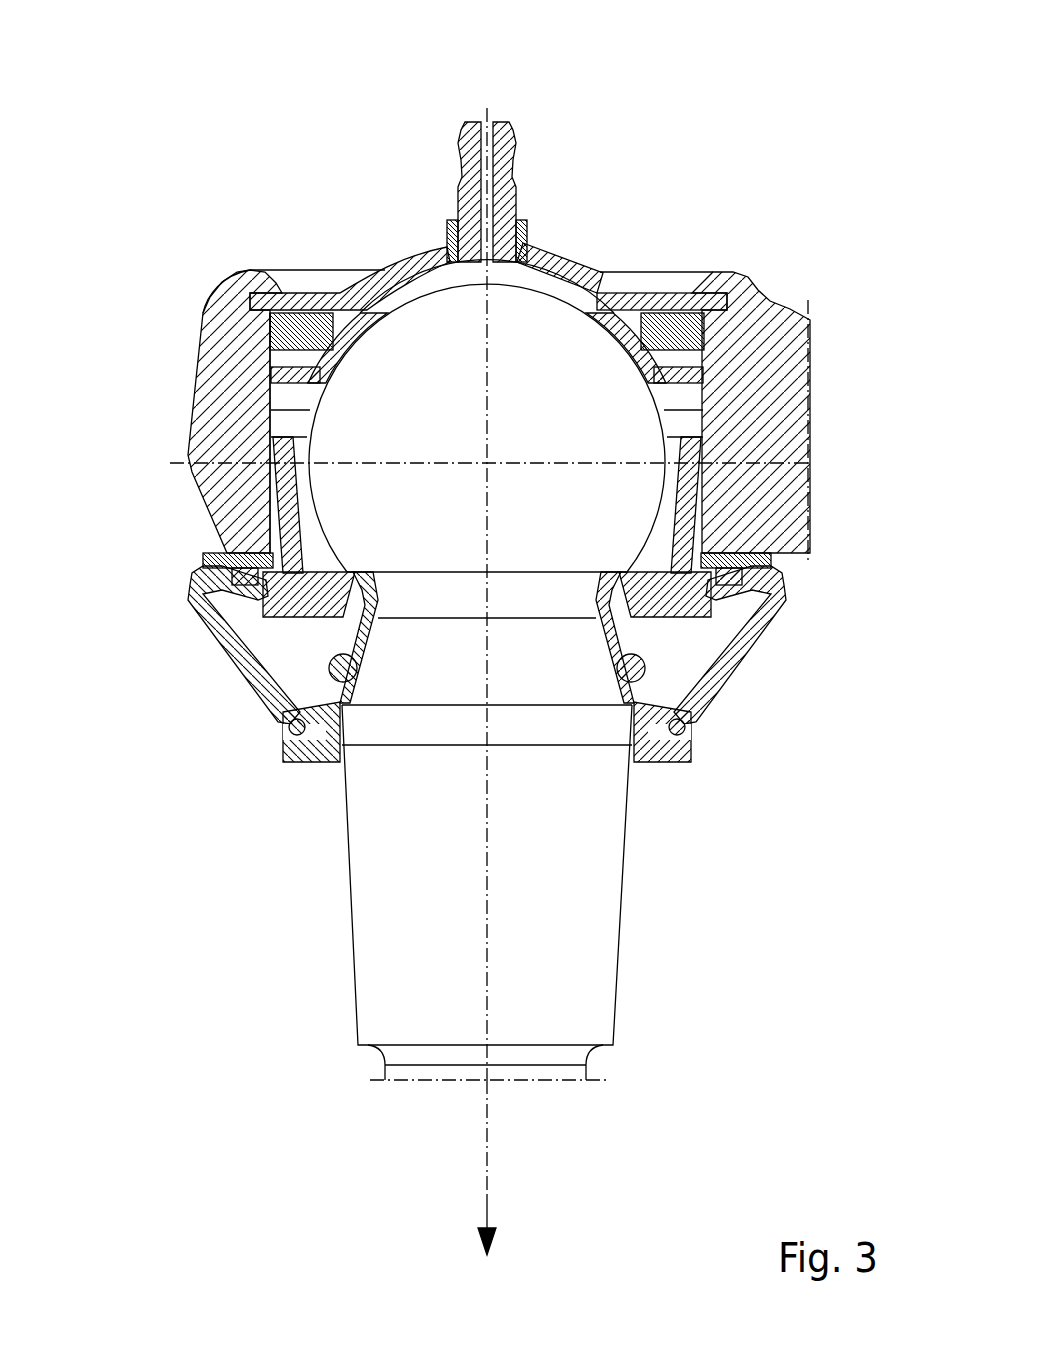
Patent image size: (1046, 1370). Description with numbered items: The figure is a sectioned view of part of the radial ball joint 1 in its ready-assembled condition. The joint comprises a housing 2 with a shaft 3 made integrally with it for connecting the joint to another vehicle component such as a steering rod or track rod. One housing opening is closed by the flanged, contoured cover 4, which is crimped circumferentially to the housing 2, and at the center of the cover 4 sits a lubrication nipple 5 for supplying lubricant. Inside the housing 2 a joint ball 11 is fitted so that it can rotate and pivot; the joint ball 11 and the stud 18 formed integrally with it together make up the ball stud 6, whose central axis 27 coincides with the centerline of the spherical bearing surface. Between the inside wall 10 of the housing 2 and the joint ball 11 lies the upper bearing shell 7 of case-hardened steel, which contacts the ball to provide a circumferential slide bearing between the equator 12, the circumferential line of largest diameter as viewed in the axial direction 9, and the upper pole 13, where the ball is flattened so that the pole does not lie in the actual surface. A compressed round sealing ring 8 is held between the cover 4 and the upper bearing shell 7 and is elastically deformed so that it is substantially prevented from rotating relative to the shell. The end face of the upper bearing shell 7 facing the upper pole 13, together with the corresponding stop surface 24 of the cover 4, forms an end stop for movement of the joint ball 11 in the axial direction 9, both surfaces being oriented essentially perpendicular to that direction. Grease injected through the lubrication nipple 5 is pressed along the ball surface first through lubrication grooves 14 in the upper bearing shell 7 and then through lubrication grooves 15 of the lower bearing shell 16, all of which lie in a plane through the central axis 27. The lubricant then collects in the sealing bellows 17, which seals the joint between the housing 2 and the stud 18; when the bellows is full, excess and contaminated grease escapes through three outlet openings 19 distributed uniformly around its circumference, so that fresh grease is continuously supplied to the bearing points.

The radial ball joint 1 is at (680, 226).
The housing 2 is at (180, 427).
The shaft 3 is at (793, 404).
The cover 4 is at (553, 265).
The lubrication nipple 5 is at (516, 128).
The ball stud 6 is at (320, 941).
The upper bearing shell 7 is at (330, 335).
The round sealing ring 8 is at (757, 290).
The axial direction 9 is at (487, 1217).
The inside wall 10 is at (265, 410).
The joint ball 11 is at (372, 512).
The equator 12 is at (345, 468).
The upper pole 13 is at (448, 300).
The lubrication grooves 14 is at (628, 378).
The lubrication grooves 15 is at (645, 525).
The lower bearing shell 16 is at (660, 506).
The sealing bellows 17 is at (727, 650).
The stud 18 is at (370, 848).
The outlet openings 19 is at (258, 724).
The stop surface 24 is at (257, 322).
The central axis 27 is at (487, 1122).